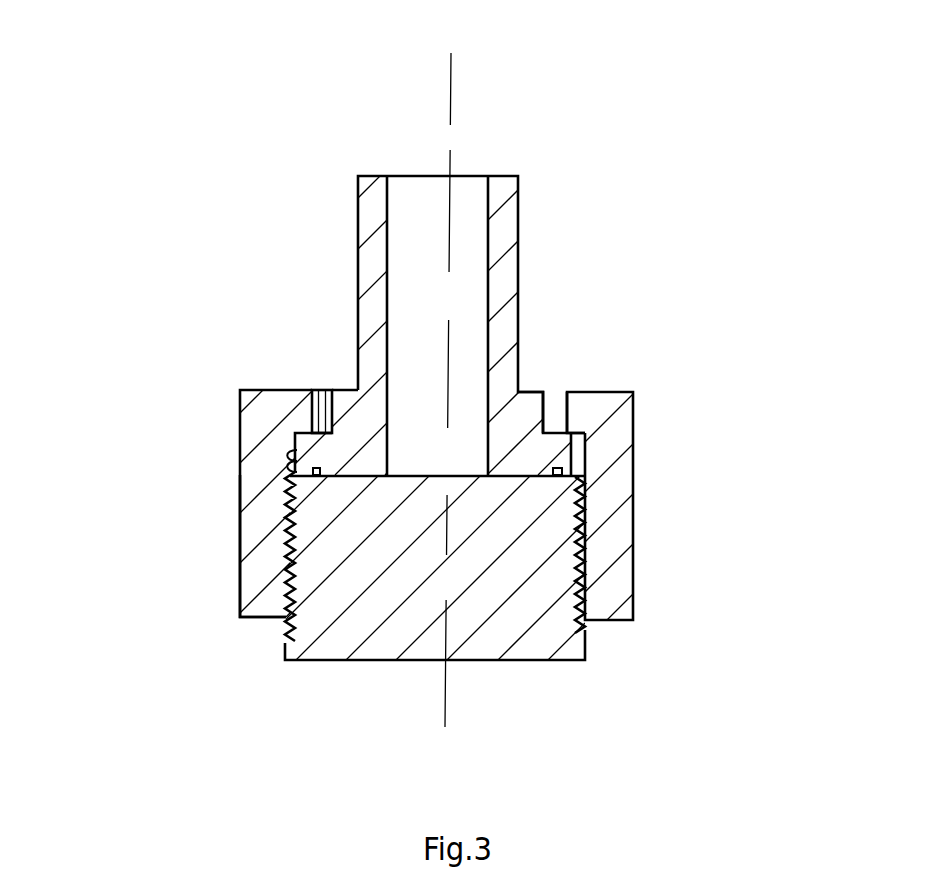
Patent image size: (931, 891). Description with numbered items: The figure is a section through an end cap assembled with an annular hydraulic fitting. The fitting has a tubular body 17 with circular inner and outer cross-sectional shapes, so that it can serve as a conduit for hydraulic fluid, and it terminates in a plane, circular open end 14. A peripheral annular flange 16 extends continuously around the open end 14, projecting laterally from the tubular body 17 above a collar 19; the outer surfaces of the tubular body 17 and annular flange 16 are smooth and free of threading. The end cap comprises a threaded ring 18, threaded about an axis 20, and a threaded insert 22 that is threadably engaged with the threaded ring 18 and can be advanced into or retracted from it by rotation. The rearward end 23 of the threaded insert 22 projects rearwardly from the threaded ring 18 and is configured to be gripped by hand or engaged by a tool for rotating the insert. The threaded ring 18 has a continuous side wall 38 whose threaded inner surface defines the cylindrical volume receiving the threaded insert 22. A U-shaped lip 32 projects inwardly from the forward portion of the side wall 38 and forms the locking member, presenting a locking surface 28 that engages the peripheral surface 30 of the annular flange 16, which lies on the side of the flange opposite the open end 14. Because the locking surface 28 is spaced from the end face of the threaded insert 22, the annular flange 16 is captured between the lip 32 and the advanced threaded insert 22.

The open end 14 is at (393, 472).
The annular flange 16 is at (532, 458).
The tubular body 17 is at (520, 253).
The threaded ring 18 is at (248, 446).
The collar 19 is at (533, 390).
The axis 20 is at (451, 88).
The threaded insert 22 is at (367, 640).
The rearward end 23 is at (283, 648).
The locking surface 28 is at (575, 437).
The peripheral surface 30 is at (310, 390).
The U-shaped lip 32 is at (577, 430).
The side wall 38 is at (258, 534).